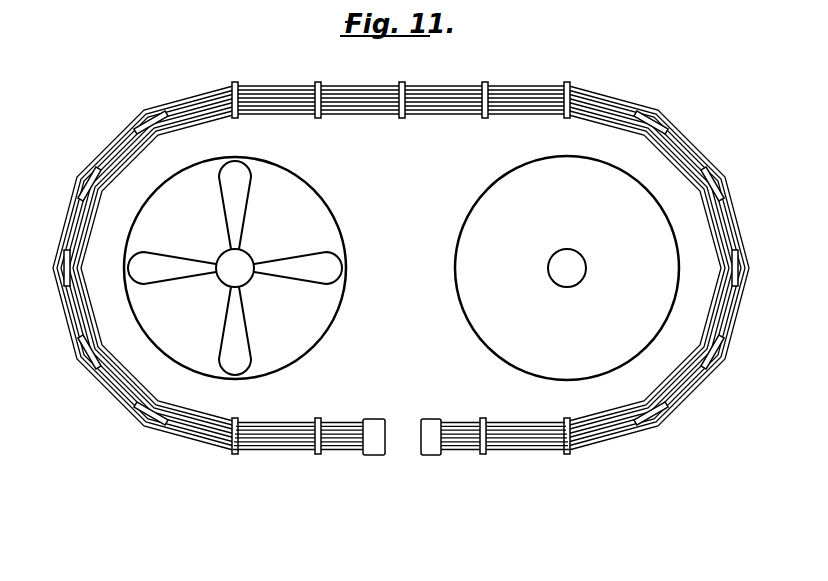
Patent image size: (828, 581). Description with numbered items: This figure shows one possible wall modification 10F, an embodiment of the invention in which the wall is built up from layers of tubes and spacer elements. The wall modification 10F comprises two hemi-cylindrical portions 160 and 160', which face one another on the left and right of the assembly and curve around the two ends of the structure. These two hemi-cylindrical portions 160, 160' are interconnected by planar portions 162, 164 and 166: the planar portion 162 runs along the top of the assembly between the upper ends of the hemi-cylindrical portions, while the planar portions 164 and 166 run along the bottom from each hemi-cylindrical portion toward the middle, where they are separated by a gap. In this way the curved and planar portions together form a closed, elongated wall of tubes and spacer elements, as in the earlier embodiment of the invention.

The wall modification 10F is at (498, 60).
The hemi-cylindrical portion 160 is at (141, 268).
The hemi-cylindrical portion 160' is at (656, 268).
The planar portion 162 is at (362, 118).
The planar portion 164 is at (265, 452).
The planar portion 166 is at (523, 452).